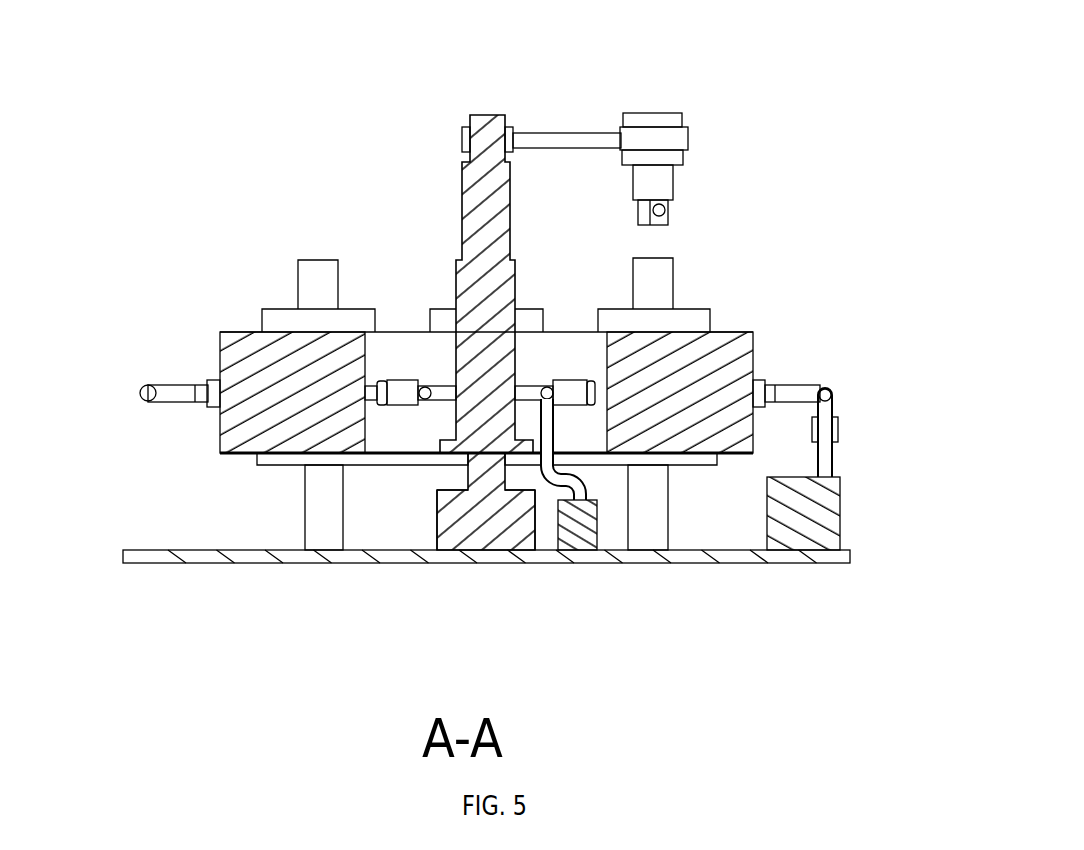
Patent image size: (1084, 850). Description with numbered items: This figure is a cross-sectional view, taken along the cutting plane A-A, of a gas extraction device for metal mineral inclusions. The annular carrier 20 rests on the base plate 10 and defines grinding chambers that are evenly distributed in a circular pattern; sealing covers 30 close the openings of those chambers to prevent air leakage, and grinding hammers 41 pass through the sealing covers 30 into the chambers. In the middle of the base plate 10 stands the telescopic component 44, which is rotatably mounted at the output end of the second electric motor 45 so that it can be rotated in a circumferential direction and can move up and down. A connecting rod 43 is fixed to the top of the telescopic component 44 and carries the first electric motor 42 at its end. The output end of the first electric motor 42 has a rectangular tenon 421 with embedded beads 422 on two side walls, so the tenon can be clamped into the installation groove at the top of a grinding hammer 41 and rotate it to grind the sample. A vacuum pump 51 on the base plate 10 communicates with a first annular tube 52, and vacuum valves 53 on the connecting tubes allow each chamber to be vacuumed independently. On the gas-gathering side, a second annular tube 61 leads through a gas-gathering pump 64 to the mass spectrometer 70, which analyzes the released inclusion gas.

The base plate 10 is at (265, 553).
The annular carrier 20 is at (243, 357).
The sealing cover 30 is at (283, 322).
The grinding hammer 41 is at (320, 277).
The first electric motor 42 is at (680, 120).
The rectangular tenon 421 is at (667, 223).
The embedded bead 422 is at (667, 208).
The connecting rod 43 is at (562, 137).
The telescopic component 44 is at (473, 120).
The second electric motor 45 is at (487, 525).
The vacuum pump 51 is at (577, 523).
The first annular tube 52 is at (442, 400).
The vacuum valve 53 is at (397, 393).
The second annular tube 61 is at (167, 392).
The gas-gathering pump 64 is at (837, 428).
The mass spectrometer 70 is at (815, 520).